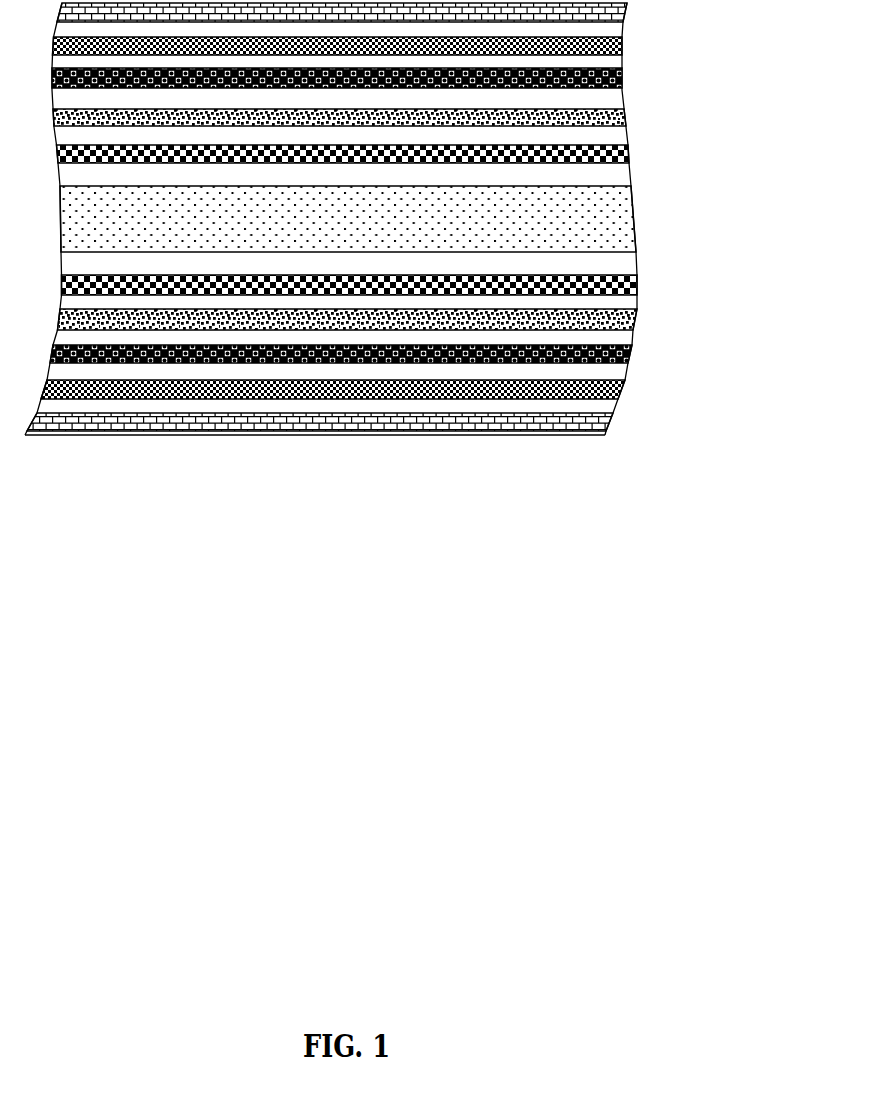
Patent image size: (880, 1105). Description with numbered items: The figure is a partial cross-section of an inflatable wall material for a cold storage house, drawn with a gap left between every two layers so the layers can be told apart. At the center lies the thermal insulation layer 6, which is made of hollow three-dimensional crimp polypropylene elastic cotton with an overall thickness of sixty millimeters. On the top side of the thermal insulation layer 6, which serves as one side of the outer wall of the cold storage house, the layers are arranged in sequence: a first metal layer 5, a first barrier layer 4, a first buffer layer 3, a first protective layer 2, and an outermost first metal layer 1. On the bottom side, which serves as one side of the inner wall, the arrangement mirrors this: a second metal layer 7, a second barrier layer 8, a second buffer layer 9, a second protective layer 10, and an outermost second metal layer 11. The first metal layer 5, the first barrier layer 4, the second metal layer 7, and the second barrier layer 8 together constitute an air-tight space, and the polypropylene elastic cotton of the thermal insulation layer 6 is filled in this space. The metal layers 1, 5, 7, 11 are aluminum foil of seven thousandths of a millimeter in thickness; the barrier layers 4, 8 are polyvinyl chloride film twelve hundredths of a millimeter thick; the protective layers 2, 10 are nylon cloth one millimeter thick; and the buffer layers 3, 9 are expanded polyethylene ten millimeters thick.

The first metal layer 1 is at (627, 3).
The first protective layer 2 is at (622, 33).
The first buffer layer 3 is at (622, 68).
The first barrier layer 4 is at (625, 108).
The first metal layer 5 is at (628, 145).
The thermal insulation layer 6 is at (630, 215).
The second metal layer 7 is at (637, 272).
The second barrier layer 8 is at (637, 312).
The second buffer layer 9 is at (630, 347).
The second protective layer 10 is at (625, 382).
The second metal layer 11 is at (612, 420).